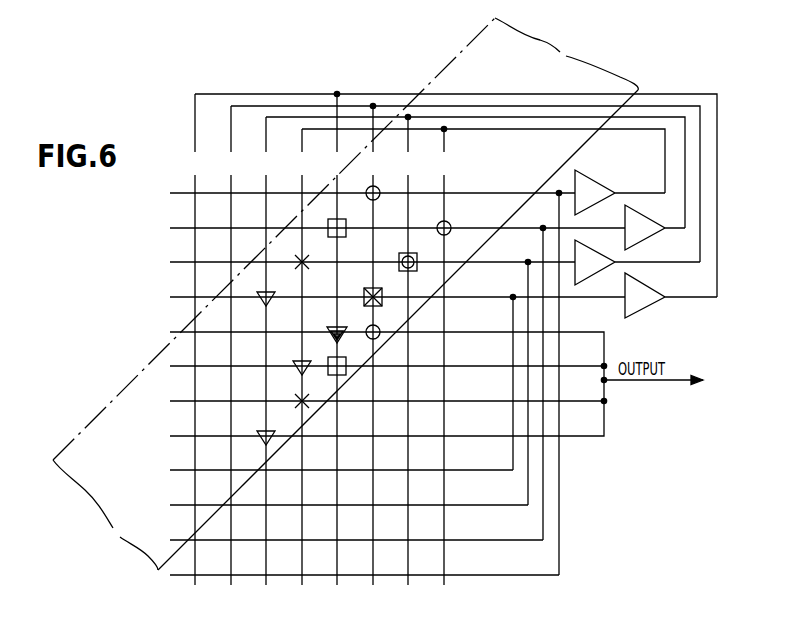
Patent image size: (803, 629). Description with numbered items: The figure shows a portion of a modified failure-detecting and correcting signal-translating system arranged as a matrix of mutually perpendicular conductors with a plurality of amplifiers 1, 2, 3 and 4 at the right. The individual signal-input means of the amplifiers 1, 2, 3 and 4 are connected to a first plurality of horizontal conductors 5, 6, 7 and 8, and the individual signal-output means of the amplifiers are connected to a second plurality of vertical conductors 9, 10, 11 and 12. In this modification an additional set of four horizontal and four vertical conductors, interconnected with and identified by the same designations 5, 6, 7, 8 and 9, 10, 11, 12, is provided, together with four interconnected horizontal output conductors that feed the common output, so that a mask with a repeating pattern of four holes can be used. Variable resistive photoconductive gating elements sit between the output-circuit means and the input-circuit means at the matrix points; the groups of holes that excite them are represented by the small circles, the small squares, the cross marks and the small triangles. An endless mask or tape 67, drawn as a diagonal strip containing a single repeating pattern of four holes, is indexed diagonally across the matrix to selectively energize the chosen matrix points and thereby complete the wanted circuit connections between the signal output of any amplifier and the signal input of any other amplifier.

The endless mask or tape 67 is at (123, 392).
The amplifier 1 is at (620, 192).
The amplifier 2 is at (655, 227).
The amplifier 3 is at (637, 262).
The amplifier 4 is at (671, 295).
The conductor 5 is at (502, 193).
The conductor 6 is at (497, 227).
The conductor 7 is at (514, 261).
The conductor 8 is at (494, 296).
The conductor 9 is at (266, 339).
The conductor 10 is at (302, 345).
The conductor 11 is at (337, 351).
The conductor 12 is at (373, 357).